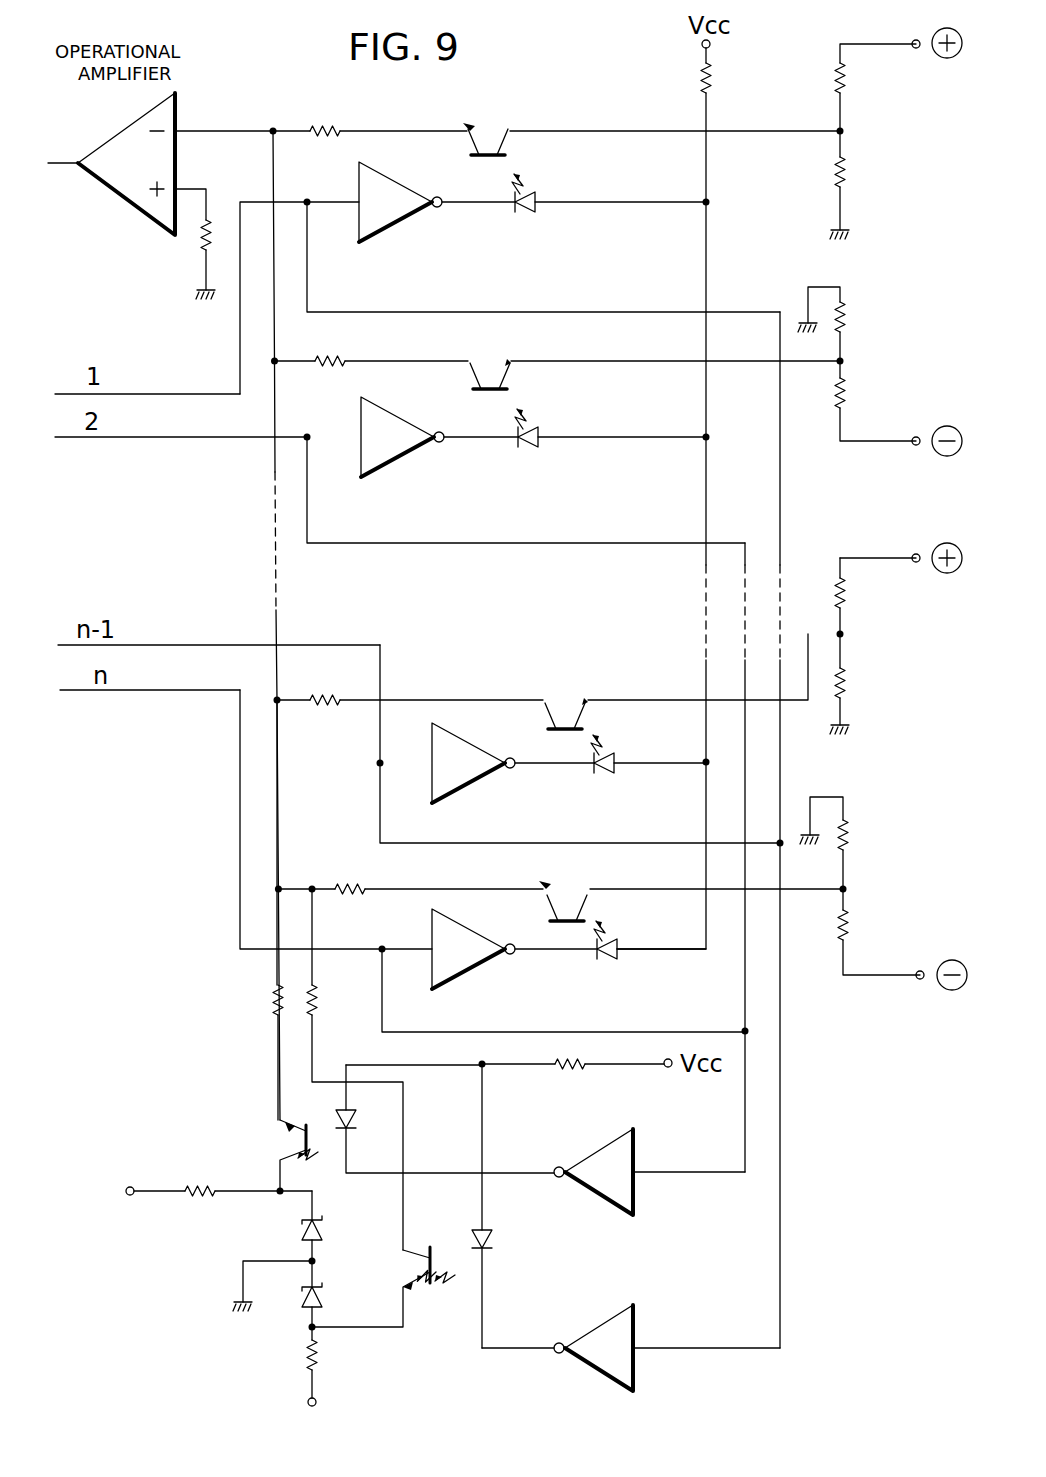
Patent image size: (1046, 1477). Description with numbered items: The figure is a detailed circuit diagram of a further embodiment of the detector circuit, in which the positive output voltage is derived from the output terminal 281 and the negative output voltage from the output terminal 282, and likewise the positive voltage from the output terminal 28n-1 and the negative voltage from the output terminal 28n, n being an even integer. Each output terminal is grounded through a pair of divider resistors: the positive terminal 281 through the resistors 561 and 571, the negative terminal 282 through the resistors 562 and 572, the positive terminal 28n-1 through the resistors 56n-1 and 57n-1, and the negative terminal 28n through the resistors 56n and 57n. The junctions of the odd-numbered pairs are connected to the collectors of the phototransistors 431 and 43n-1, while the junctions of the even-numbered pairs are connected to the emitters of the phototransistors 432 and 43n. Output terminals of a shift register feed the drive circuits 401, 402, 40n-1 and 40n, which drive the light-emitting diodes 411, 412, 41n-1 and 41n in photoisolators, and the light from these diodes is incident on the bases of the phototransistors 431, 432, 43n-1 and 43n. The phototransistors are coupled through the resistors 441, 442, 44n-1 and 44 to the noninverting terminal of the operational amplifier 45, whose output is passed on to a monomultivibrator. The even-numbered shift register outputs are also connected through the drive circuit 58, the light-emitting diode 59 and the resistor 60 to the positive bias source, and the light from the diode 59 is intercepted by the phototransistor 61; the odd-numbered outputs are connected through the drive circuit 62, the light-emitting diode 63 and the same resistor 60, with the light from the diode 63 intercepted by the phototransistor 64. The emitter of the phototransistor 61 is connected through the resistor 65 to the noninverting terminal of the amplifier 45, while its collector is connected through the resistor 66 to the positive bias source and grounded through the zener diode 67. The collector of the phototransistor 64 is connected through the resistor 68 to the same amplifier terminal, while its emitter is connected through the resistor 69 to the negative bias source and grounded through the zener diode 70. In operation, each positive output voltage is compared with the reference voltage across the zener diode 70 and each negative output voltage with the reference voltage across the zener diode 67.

The operational amplifier 45 is at (112, 194).
The resistor 441 is at (327, 137).
The resistor 442 is at (333, 367).
The resistor 44n-1 is at (328, 706).
The resistor 44 is at (351, 882).
The drive circuit 401 is at (376, 184).
The drive circuit 402 is at (400, 460).
The drive circuit 40n-1 is at (472, 784).
The drive circuit 40n is at (472, 970).
The light-emitting diode 411 is at (540, 207).
The light-emitting diode 412 is at (543, 442).
The light-emitting diode 41n-1 is at (598, 773).
The light-emitting diode 41n is at (617, 954).
The phototransistor 431 is at (502, 154).
The phototransistor 432 is at (489, 362).
The phototransistor 43n-1 is at (567, 718).
The phototransistor 43n is at (584, 916).
The resistor 561 is at (836, 87).
The resistor 562 is at (845, 397).
The resistor 56n-1 is at (845, 597).
The resistor 56n is at (848, 928).
The resistor 571 is at (840, 182).
The resistor 572 is at (845, 325).
The resistor 57n-1 is at (845, 687).
The resistor 57n is at (848, 835).
The output terminal 281 is at (916, 50).
The output terminal 282 is at (916, 447).
The output terminal 28n-1 is at (916, 556).
The output terminal 28n is at (920, 981).
The drive circuit 58 is at (636, 1149).
The light-emitting diode 59 is at (352, 1118).
The resistor 60 is at (570, 1070).
The phototransistor 61 is at (294, 1141).
The drive circuit 62 is at (636, 1321).
The light-emitting diode 63 is at (492, 1244).
The phototransistor 64 is at (420, 1258).
The resistor 65 is at (269, 1002).
The resistor 66 is at (198, 1197).
The zener diode 67 is at (322, 1229).
The resistor 68 is at (318, 1002).
The resistor 69 is at (322, 1357).
The zener diode 70 is at (322, 1294).